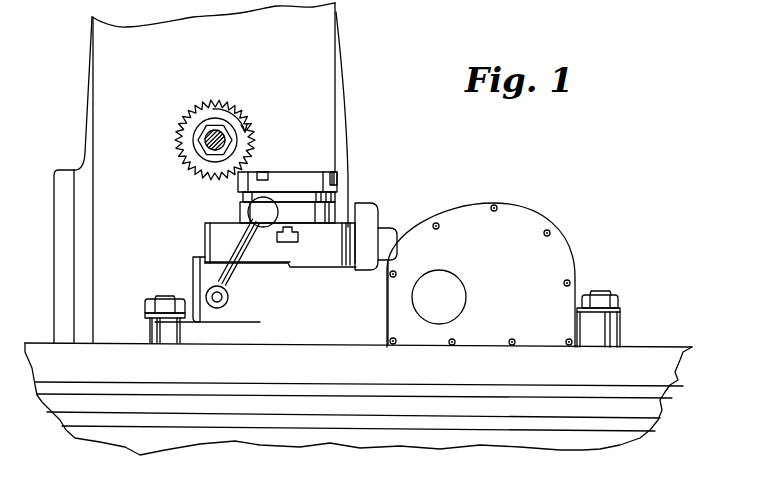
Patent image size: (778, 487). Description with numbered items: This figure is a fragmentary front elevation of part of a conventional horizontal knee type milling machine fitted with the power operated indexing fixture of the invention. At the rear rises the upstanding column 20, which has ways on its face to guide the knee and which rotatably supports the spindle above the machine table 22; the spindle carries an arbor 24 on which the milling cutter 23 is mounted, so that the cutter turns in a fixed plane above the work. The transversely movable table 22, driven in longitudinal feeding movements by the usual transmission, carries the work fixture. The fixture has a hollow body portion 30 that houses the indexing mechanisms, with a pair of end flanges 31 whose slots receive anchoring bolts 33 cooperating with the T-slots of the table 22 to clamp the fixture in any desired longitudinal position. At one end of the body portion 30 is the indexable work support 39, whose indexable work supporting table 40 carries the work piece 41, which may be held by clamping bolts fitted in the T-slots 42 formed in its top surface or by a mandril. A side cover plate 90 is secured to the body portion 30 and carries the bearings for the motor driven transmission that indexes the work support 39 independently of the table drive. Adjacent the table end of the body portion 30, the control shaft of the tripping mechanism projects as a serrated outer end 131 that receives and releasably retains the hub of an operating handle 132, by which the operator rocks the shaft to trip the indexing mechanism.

The column 20 is at (320, 111).
The table 22 is at (645, 361).
The cutter 23 is at (195, 108).
The arbor 24 is at (210, 138).
The body portion 30 is at (205, 271).
The end flanges 31 is at (170, 329).
The anchoring bolts 33 is at (166, 292).
The indexable work support 39 is at (338, 245).
The indexable work supporting table 40 is at (354, 221).
The work piece 41 is at (302, 175).
The T-slots 42 is at (287, 243).
The side cover plate 90 is at (549, 248).
The serrated outer end 131 is at (228, 298).
The operating handle 132 is at (250, 249).